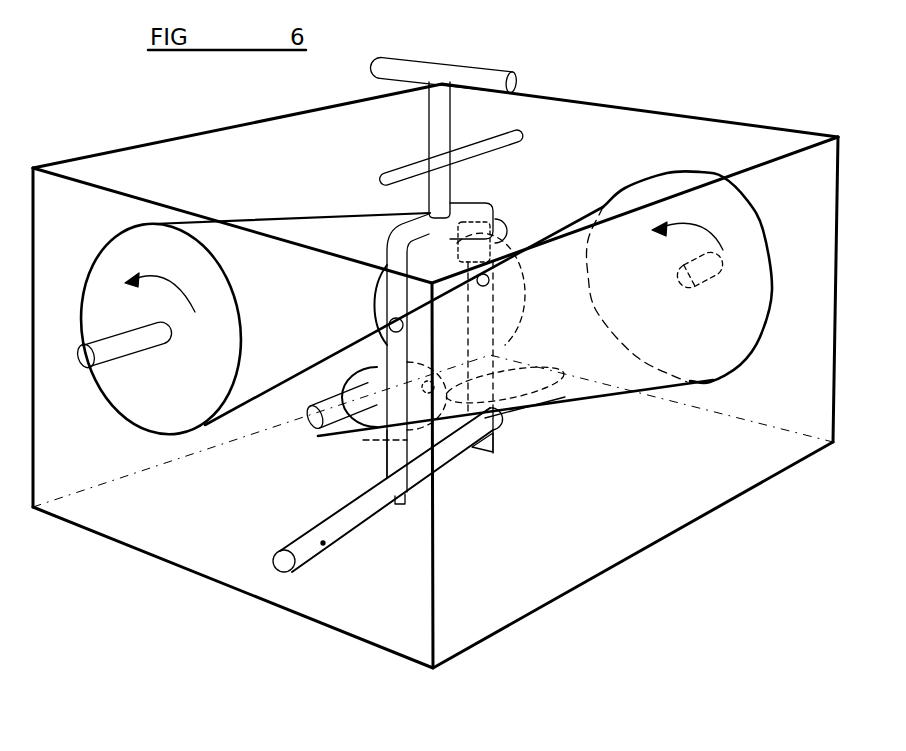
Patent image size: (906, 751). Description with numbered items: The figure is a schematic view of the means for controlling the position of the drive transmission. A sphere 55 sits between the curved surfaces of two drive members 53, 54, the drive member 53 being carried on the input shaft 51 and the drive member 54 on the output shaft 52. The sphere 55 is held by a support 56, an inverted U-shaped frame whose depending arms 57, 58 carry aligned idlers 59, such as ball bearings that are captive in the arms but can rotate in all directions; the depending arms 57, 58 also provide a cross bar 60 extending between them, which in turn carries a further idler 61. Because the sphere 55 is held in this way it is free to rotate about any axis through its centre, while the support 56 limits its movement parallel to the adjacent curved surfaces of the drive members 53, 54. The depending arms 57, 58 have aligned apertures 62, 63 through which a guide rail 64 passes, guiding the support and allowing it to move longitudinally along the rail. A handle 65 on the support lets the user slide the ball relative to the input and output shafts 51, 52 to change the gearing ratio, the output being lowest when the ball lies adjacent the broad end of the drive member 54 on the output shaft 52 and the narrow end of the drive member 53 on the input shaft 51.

The input shaft 51 is at (302, 422).
The output shaft 52 is at (84, 358).
The drive member 53 is at (595, 388).
The drive member 54 is at (313, 219).
The sphere 55 is at (374, 296).
The support 56 is at (387, 244).
The depending arm 57 is at (385, 474).
The depending arm 58 is at (493, 452).
The idlers 59 is at (389, 328).
The cross bar 60 is at (376, 440).
The idler 61 is at (505, 378).
The aperture 62 is at (413, 500).
The aperture 63 is at (497, 426).
The guide rail 64 is at (323, 544).
The handle 65 is at (479, 67).